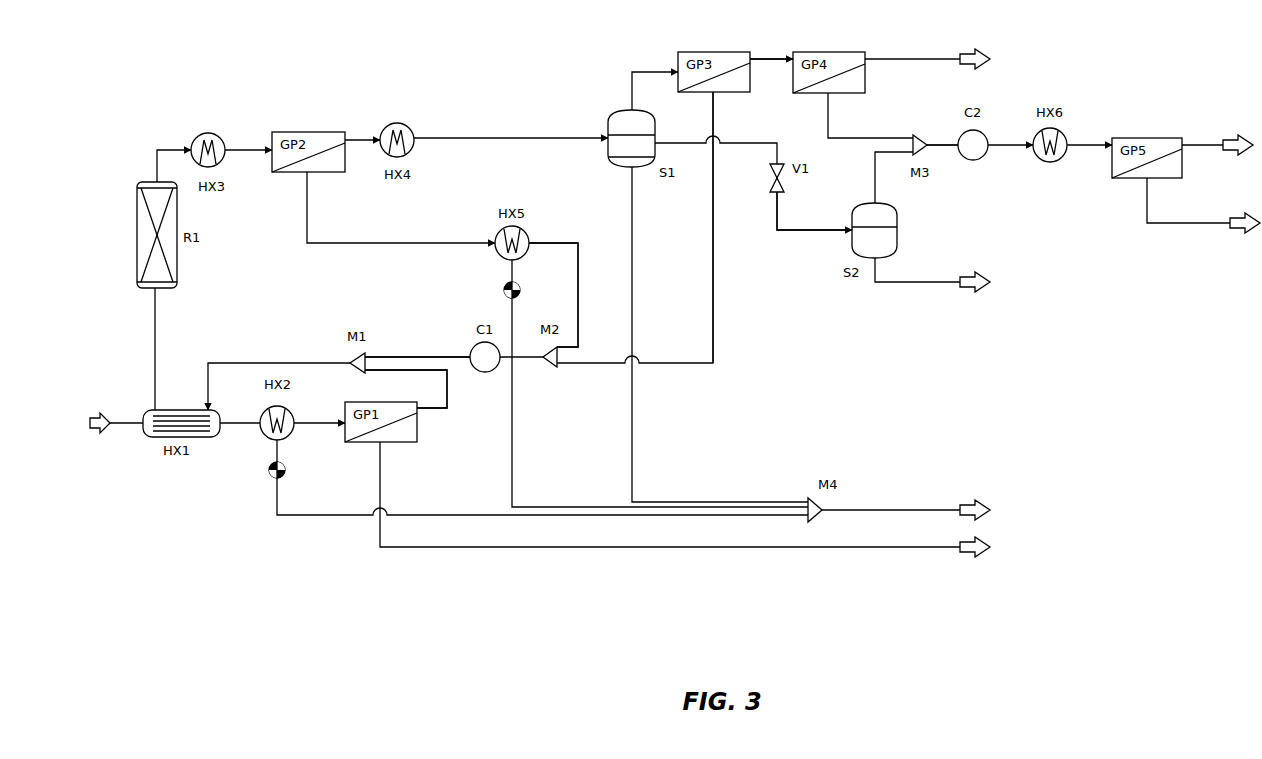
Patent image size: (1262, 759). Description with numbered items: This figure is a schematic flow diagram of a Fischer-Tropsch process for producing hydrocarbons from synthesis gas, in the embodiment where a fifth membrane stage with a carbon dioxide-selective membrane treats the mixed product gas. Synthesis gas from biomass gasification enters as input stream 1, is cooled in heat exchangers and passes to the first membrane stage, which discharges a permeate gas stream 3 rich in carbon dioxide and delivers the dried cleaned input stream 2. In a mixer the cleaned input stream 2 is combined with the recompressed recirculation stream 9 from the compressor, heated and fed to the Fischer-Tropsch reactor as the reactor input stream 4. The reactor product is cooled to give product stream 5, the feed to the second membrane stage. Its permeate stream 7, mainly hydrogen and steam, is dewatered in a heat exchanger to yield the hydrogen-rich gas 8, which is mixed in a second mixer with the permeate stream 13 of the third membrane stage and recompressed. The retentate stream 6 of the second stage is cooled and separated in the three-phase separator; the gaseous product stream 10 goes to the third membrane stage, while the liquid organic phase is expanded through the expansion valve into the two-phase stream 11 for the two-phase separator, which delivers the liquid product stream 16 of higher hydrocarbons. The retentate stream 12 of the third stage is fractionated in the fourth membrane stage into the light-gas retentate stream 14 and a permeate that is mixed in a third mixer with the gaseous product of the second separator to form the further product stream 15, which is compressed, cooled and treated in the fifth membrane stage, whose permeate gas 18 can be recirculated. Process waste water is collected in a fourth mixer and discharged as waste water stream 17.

The input stream 1 is at (123, 423).
The cleaned input stream 2 is at (447, 397).
The permeate gas stream 3 is at (548, 547).
The reactor input stream 4 is at (155, 333).
The product stream 5 is at (243, 150).
The retentate stream of the second gas permeation stage 6 is at (468, 138).
The permeate stream of the second gas permeation stage 7 is at (390, 243).
The hydrogen-rich gas 8 is at (578, 288).
The recompressed recirculation stream 9 is at (430, 357).
The gaseous product stream 10 is at (647, 72).
The two-phase stream 11 is at (815, 230).
The retentate stream of the third membrane stage 12 is at (767, 59).
The permeate stream of the third membrane stage 13 is at (713, 287).
The retentate stream 14 is at (937, 59).
The further product stream 15 is at (938, 145).
The liquid product stream 16 is at (937, 282).
The waste water stream 17 is at (937, 510).
The permeate gas 18 is at (1212, 223).